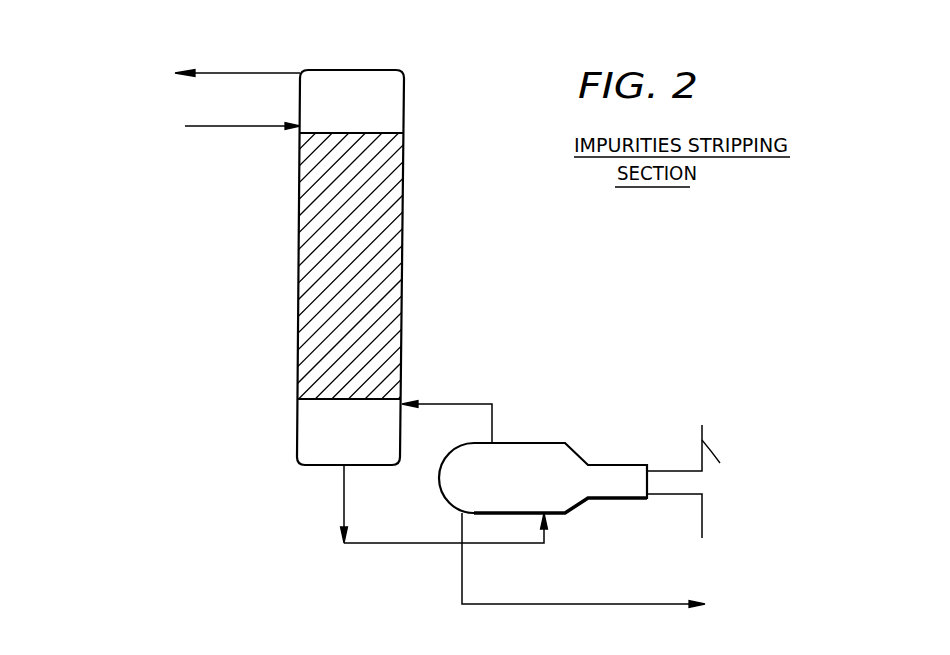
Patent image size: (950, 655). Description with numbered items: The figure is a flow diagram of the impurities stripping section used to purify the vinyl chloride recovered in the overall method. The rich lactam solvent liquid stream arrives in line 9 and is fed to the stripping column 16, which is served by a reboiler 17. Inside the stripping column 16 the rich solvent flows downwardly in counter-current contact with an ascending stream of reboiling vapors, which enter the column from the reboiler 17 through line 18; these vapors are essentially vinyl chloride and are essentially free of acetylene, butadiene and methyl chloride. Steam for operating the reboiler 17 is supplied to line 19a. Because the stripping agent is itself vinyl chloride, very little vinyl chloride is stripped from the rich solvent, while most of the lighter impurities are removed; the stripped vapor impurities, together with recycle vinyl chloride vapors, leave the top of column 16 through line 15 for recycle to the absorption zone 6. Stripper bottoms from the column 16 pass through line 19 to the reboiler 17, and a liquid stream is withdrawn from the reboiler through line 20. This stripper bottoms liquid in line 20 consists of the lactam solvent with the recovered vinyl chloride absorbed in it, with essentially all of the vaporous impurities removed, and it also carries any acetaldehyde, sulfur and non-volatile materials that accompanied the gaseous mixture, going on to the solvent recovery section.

The absorption zone 6 is at (91, 147).
The line 9 is at (263, 118).
The line 15 is at (282, 72).
The stripping column 16 is at (404, 245).
The reboiler 17 is at (580, 456).
The line 18 is at (442, 404).
The line 19 is at (344, 498).
The line 19a is at (702, 510).
The line 20 is at (566, 604).